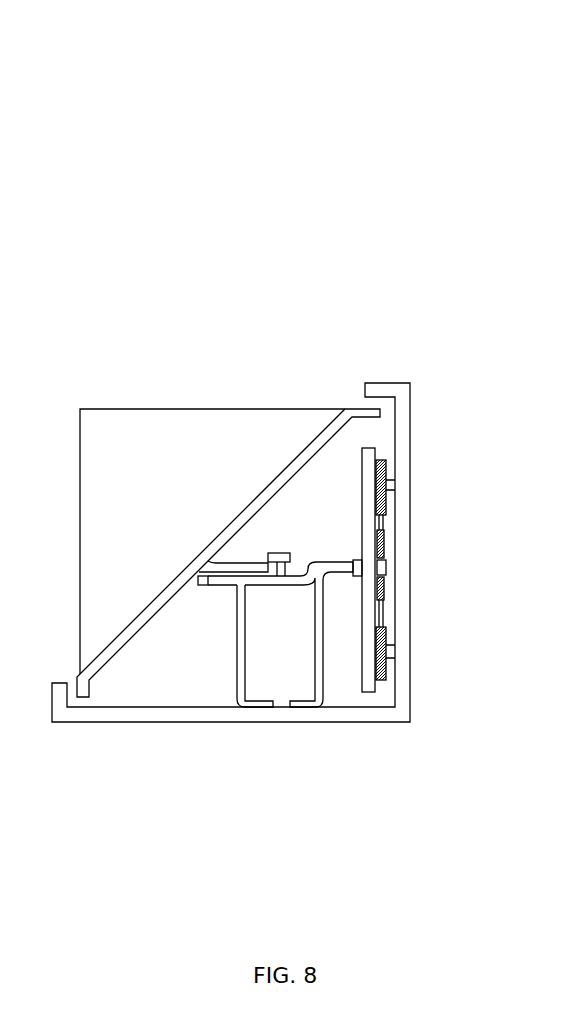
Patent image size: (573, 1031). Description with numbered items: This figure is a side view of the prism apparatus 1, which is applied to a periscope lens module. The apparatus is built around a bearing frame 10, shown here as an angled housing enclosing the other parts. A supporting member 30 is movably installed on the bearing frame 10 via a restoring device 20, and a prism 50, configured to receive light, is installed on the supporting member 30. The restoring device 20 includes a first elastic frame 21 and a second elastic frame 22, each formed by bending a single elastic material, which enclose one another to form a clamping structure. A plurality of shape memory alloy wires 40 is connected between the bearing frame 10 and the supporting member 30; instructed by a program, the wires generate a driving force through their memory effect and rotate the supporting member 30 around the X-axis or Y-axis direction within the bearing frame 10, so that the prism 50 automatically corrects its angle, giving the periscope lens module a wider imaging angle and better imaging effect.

The prism apparatus 1 is at (267, 58).
The bearing frame 10 is at (392, 713).
The restoring device 20 is at (280, 698).
The first elastic frame 21 is at (250, 712).
The second elastic frame 22 is at (262, 788).
The supporting member 30 is at (93, 663).
The shape memory alloy wires 40 is at (382, 535).
The prism 50 is at (167, 438).